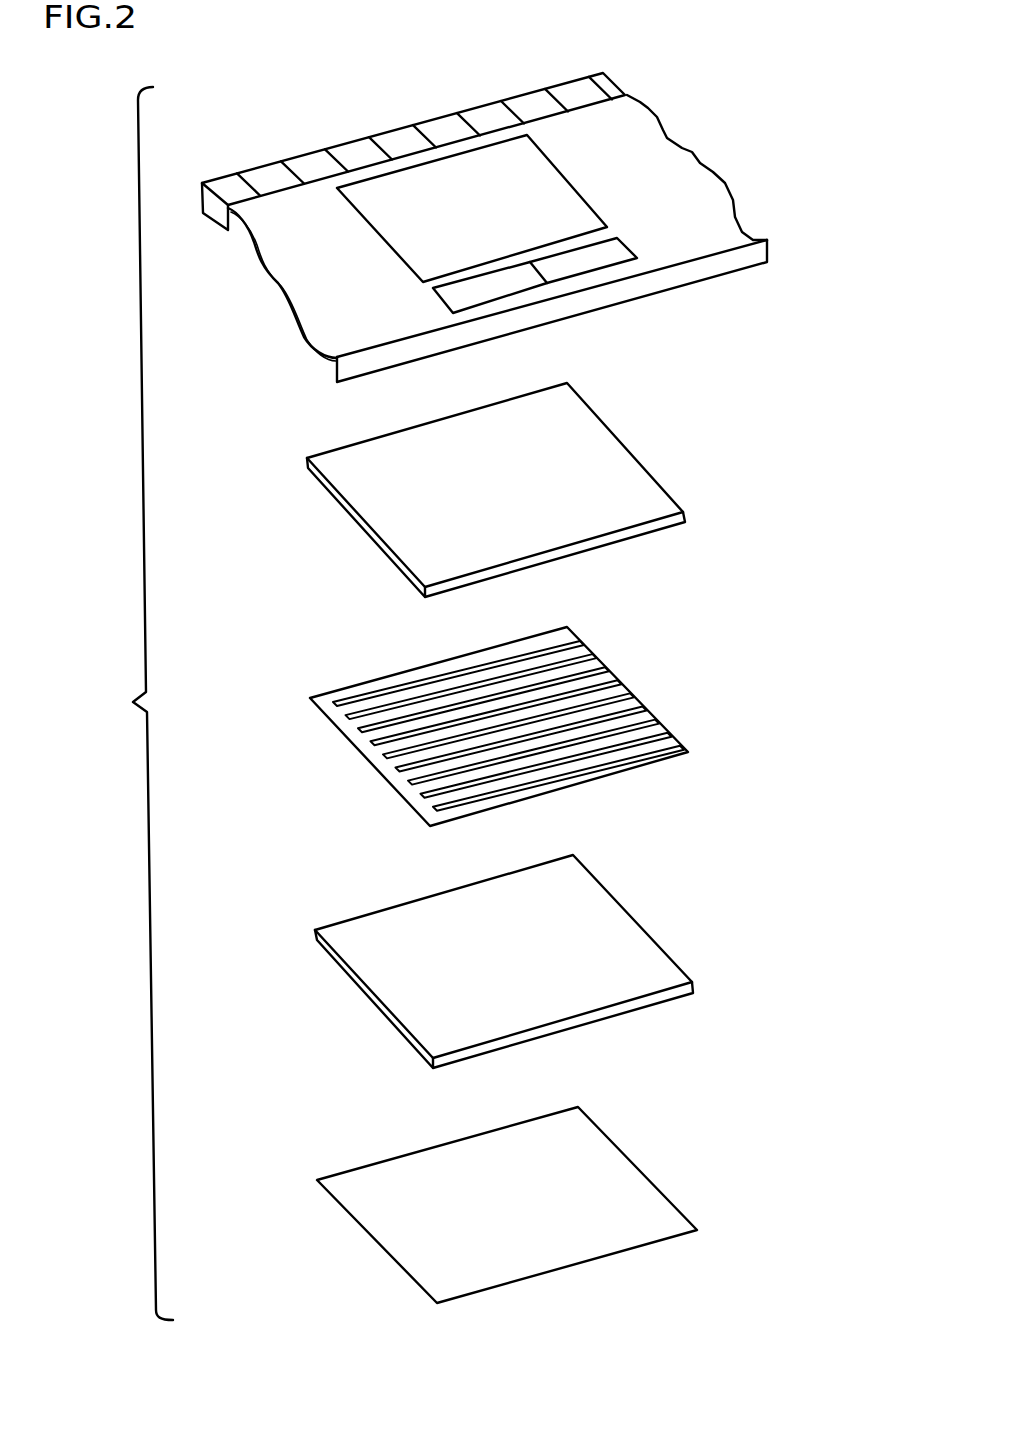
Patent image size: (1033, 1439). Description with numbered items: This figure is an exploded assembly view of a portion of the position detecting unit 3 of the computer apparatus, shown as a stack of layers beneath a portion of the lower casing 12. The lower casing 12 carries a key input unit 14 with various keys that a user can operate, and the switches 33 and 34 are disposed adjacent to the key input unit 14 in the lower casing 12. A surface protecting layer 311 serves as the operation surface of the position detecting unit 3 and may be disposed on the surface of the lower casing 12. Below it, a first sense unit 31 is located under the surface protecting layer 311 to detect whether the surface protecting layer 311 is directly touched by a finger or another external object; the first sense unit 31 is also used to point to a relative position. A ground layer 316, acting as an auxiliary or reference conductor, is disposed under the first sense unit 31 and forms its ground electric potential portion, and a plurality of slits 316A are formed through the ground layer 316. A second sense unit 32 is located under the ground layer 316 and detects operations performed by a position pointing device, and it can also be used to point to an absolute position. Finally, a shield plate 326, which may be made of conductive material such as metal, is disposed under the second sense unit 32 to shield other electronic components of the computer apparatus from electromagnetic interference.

The position detecting unit 3 is at (132, 715).
The lower casing 12 is at (733, 203).
The key input unit 14 is at (566, 93).
The surface protecting layer 311 is at (543, 180).
The switch 33 is at (503, 280).
The switch 34 is at (598, 262).
The first sense unit 31 is at (636, 460).
The ground layer 316 is at (370, 762).
The slits 316A is at (595, 639).
The second sense unit 32 is at (628, 910).
The shield plate 326 is at (626, 1155).